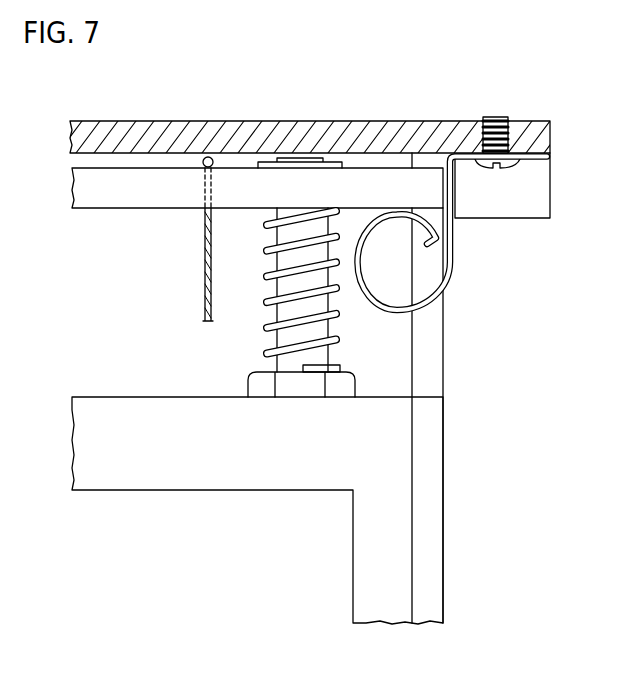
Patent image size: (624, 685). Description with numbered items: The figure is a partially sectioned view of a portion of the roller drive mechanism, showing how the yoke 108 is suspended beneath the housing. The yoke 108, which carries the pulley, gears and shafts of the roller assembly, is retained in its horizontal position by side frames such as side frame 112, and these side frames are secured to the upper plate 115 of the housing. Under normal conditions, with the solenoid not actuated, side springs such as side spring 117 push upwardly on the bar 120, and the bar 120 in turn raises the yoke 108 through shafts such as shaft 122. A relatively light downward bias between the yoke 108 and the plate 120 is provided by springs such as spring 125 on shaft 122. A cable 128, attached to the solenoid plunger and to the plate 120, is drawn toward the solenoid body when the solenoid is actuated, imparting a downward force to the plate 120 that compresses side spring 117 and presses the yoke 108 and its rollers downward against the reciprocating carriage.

The yoke 108 is at (184, 477).
The side frame 112 is at (437, 373).
The upper plate 115 is at (332, 132).
The side spring 117 is at (455, 256).
The bar 120 is at (107, 200).
The shaft 122 is at (292, 285).
The spring 125 is at (272, 352).
The cable 128 is at (205, 274).